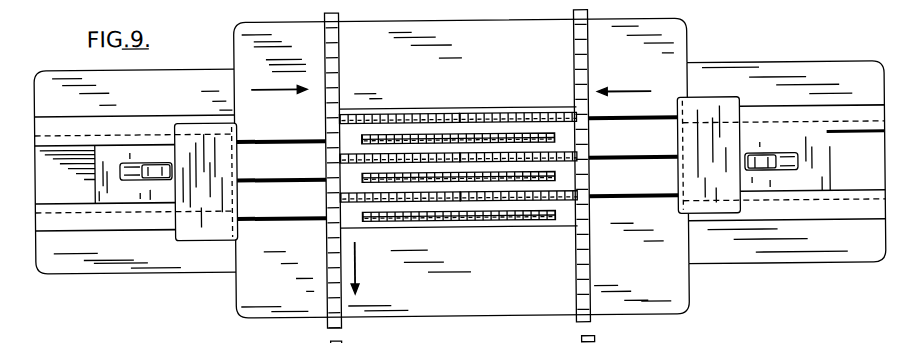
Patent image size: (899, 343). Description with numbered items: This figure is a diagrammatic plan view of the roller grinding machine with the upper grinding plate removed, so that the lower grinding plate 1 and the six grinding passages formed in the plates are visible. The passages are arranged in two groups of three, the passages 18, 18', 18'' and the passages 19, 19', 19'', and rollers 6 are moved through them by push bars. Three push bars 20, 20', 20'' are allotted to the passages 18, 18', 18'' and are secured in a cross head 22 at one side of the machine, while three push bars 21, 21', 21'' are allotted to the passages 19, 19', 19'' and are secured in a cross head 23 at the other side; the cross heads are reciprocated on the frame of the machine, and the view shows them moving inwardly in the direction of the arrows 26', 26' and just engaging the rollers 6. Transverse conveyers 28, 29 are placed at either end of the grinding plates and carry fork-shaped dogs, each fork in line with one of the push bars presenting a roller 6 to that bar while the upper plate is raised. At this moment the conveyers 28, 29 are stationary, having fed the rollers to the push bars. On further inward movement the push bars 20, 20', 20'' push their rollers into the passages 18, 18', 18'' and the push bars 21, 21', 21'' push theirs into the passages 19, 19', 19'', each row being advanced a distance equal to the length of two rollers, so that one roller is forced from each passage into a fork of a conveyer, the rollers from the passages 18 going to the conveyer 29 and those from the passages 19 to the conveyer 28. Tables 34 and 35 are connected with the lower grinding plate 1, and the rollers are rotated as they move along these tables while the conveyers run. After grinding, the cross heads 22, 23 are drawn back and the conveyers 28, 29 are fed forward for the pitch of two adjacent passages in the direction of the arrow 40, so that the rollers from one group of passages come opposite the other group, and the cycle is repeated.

The lower grinding plate 1 is at (448, 108).
The rollers 6 is at (491, 225).
The passage 18 is at (517, 104).
The passage 18' is at (541, 146).
The passage 18'' is at (543, 184).
The passage 19 is at (380, 123).
The passage 19' is at (382, 165).
The passage 19'' is at (377, 218).
The push bar 20 is at (632, 105).
The push bar 20' is at (633, 144).
The push bar 20'' is at (634, 181).
The push bar 21 is at (280, 129).
The push bar 21' is at (281, 166).
The push bar 21'' is at (281, 205).
The cross head 22 is at (721, 105).
The cross head 23 is at (218, 234).
The arrow 26' is at (454, 81).
The transverse conveyer 28 is at (584, 18).
The transverse conveyer 29 is at (340, 19).
The table 34 is at (608, 302).
The table 35 is at (310, 308).
The arrow 40 is at (368, 268).